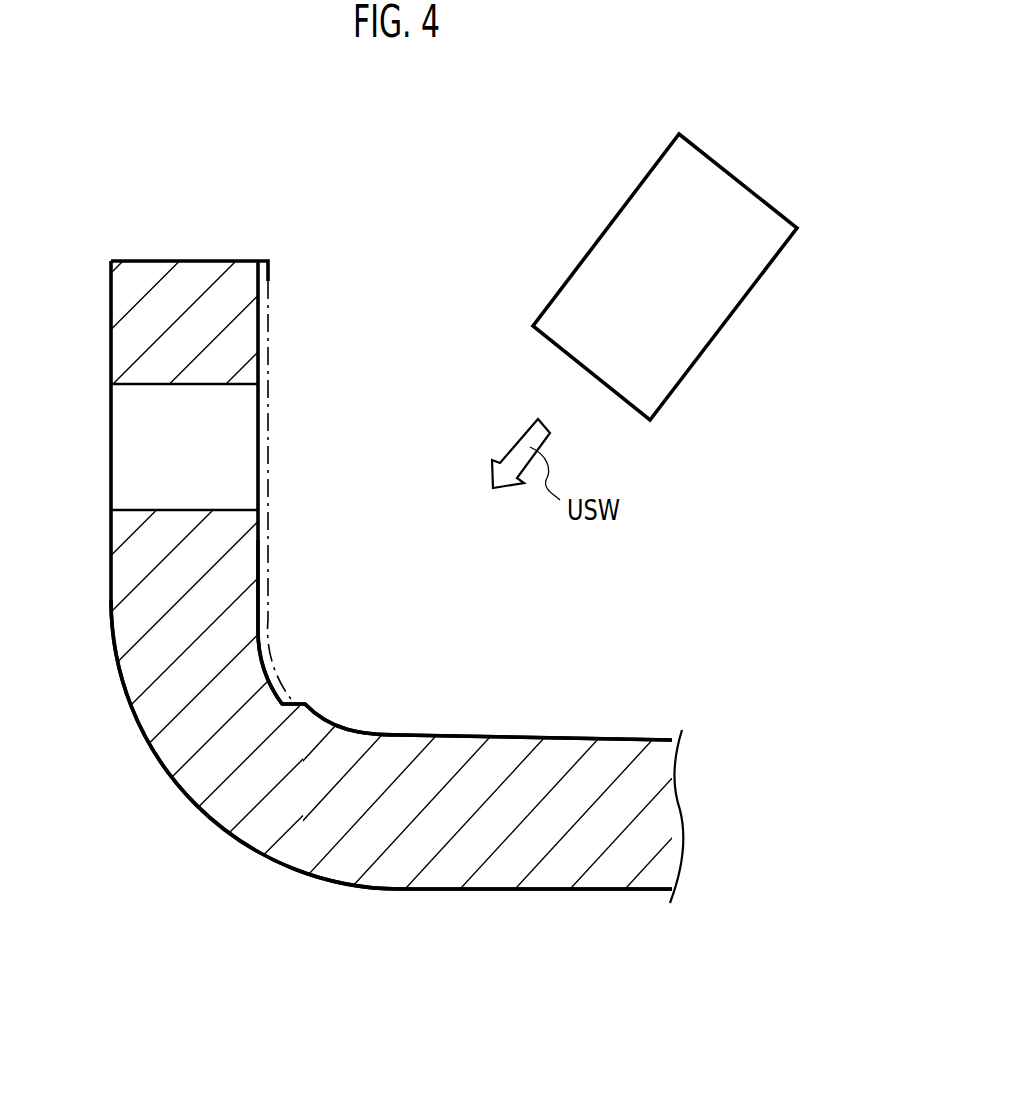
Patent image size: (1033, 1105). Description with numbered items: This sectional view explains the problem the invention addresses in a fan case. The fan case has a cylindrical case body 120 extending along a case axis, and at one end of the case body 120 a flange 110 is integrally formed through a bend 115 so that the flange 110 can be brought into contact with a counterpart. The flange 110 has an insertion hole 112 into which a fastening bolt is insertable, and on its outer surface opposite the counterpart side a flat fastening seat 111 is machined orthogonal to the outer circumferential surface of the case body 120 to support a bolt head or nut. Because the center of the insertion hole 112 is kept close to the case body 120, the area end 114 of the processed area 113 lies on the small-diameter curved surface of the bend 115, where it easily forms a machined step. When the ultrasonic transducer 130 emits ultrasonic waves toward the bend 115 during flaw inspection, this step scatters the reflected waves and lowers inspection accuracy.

The flange 110 is at (176, 268).
The fastening seat 111 is at (262, 352).
The insertion hole 112 is at (138, 510).
The processed area 113 is at (265, 573).
The area end 114 is at (305, 704).
The bend 115 is at (198, 802).
The case body 120 is at (582, 743).
The ultrasonic transducer 130 is at (662, 153).